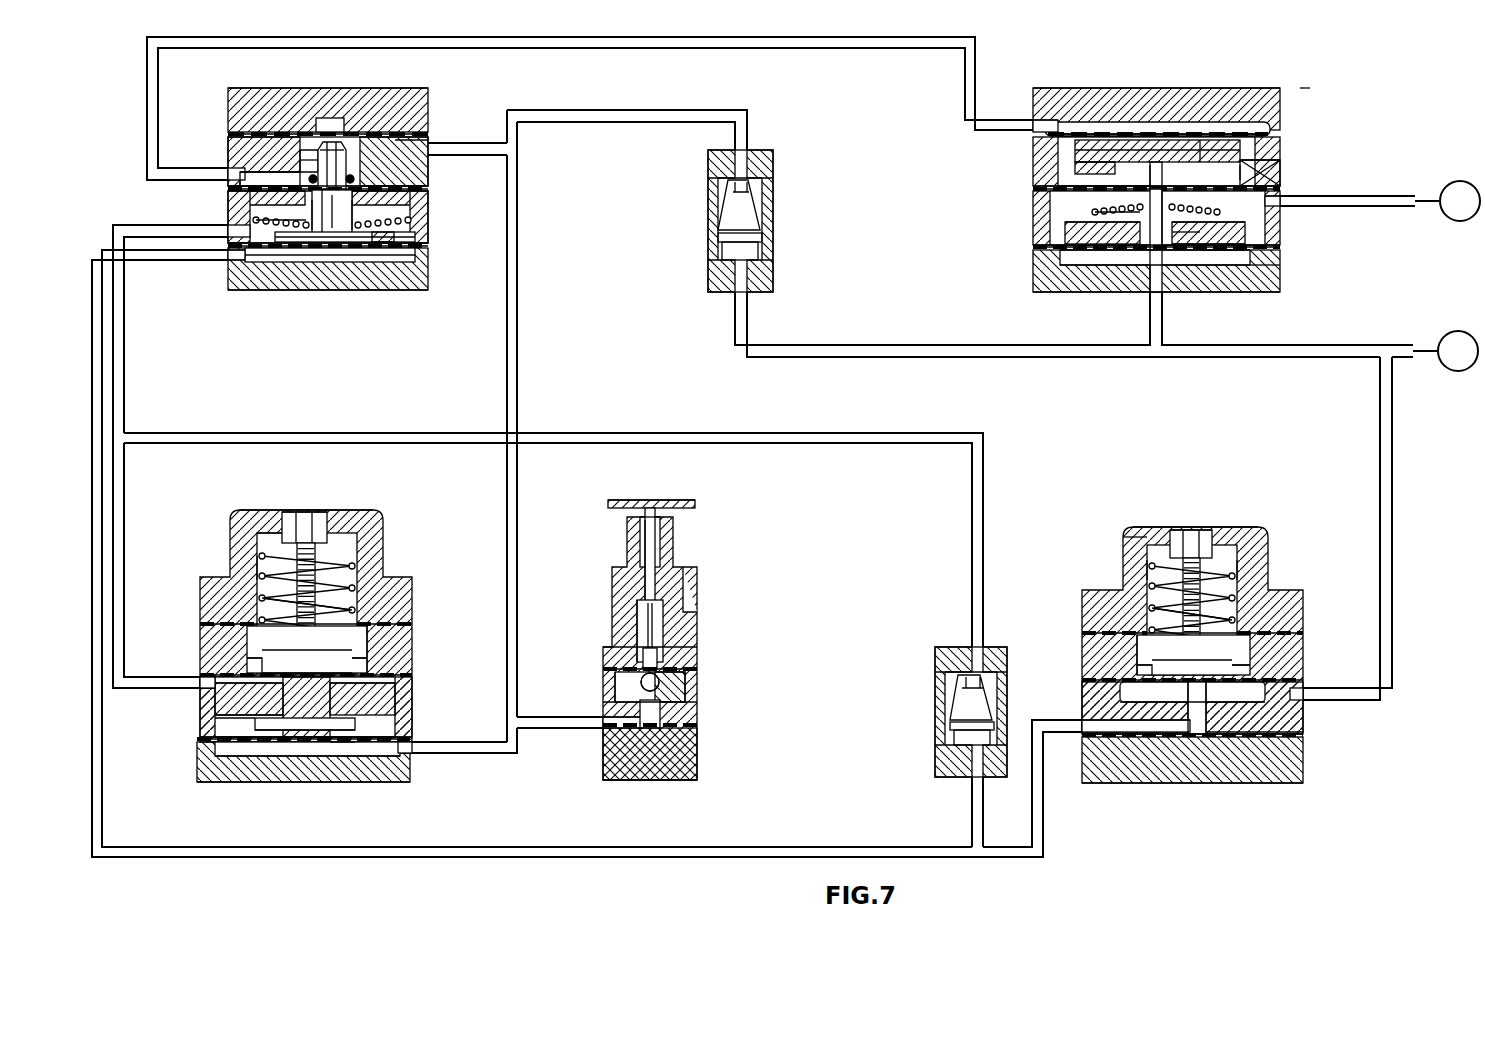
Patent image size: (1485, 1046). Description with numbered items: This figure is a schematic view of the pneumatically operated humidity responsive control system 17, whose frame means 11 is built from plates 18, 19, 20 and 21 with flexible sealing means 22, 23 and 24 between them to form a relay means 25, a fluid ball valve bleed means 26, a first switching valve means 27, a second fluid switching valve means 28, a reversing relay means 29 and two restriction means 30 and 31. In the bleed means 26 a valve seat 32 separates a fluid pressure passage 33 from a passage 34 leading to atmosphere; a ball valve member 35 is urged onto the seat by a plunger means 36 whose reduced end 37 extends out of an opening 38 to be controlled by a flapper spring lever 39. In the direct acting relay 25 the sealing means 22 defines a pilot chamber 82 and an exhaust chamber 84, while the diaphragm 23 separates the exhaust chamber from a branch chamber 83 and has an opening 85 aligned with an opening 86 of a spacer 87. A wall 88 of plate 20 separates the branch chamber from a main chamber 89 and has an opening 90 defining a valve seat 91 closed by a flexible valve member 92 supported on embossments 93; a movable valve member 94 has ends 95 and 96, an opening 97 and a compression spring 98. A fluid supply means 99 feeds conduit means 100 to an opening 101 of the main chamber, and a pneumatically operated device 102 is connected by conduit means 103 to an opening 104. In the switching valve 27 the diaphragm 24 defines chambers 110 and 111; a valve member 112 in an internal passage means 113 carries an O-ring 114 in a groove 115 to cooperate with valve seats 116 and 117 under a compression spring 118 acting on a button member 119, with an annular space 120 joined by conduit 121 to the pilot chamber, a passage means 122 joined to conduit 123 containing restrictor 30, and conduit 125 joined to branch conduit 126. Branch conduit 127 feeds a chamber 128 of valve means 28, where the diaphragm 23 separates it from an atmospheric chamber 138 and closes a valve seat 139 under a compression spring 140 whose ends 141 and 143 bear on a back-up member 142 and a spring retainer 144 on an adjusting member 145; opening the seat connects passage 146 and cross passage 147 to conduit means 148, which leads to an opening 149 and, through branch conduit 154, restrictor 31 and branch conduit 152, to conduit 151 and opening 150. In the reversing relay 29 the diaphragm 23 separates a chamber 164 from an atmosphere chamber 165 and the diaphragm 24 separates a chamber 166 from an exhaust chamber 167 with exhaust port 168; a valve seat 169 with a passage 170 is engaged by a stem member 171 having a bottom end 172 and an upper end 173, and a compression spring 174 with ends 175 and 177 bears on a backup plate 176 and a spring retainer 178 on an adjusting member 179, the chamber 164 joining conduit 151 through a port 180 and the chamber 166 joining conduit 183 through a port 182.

The frame means 11 is at (1150, 530).
The control system 17 is at (1306, 44).
The housing plate 18 is at (412, 106).
The housing plate 19 is at (405, 165).
The housing plate 20 is at (410, 212).
The housing plate 21 is at (405, 278).
The flexible sealing means 22 is at (268, 133).
The flexible sealing means 23 is at (245, 190).
The flexible sealing means 24 is at (392, 247).
The relay construction means 25 is at (1290, 116).
The fluid ball valve bleed means 26 is at (722, 564).
The first switching valve means 27 is at (258, 297).
The second fluid switching valve means 28 is at (1274, 539).
The reversing relay means 29 is at (398, 513).
The restriction means 30 is at (775, 214).
The restriction means 31 is at (924, 670).
The valve seat 32 is at (625, 692).
The fluid pressure passage 33 is at (620, 725).
The passage 34 is at (628, 672).
The ball valve member 35 is at (660, 682).
The plunger means 36 is at (640, 620).
The reduced end 37 is at (635, 530).
The opening 38 is at (642, 545).
The flapper spring lever 39 is at (680, 502).
The pilot chamber 82 is at (1158, 130).
The branch chamber 83 is at (1082, 205).
The exhaust chamber 84 is at (1058, 140).
The opening 85 is at (1160, 165).
The opening 86 is at (1090, 165).
The spacer 87 is at (1105, 140).
The wall 88 is at (1205, 252).
The main chamber 89 is at (1070, 257).
The opening 90 is at (1100, 228).
The valve seat 91 is at (1175, 256).
The flexible valve member 92 is at (1278, 290).
The embossments 93 is at (1110, 262).
The movable valve member 94 is at (1265, 243).
The end 95 is at (1090, 186).
The end 96 is at (1162, 258).
The opening 97 is at (1262, 216).
The compression spring 98 is at (1265, 172).
The fluid supply means 99 is at (1456, 372).
The conduit means 100 is at (1298, 358).
The opening 101 is at (1142, 266).
The pneumatically operated device 102 is at (1470, 182).
The conduit means 103 is at (1408, 208).
The opening 104 is at (1262, 198).
The chamber 110 is at (256, 220).
The chamber 111 is at (318, 256).
The valve member 112 is at (350, 215).
The internal passage means 113 is at (360, 200).
The O-ring 114 is at (270, 168).
The annular groove 115 is at (335, 142).
The upper valve seat 116 is at (305, 160).
The lower valve seat 117 is at (310, 184).
The compression spring 118 is at (385, 233).
The button member 119 is at (368, 248).
The annular space 120 is at (405, 145).
The conduit 121 is at (633, 37).
The passage means 122 is at (504, 138).
The conduit 123 is at (627, 108).
The conduit 125 is at (521, 380).
The branch conduit 126 is at (548, 728).
The branch conduit 127 is at (1393, 480).
The chamber 128 is at (1250, 698).
The atmospheric chamber 138 is at (1145, 645).
The valve seat 139 is at (1190, 722).
The compression spring 140 is at (1165, 600).
The end 141 is at (1148, 665).
The back-up member 142 is at (1250, 668).
The end 143 is at (1165, 572).
The spring retainer 144 is at (1232, 562).
The threaded adjusting member 145 is at (1212, 540).
The passage 146 is at (1205, 702).
The cross passage 147 is at (1125, 732).
The conduit means 148 is at (1042, 858).
The opening 149 is at (233, 270).
The opening 150 is at (228, 255).
The conduit 151 is at (118, 225).
The branch conduit 152 is at (330, 432).
The branch conduit 154 is at (971, 800).
The chamber 164 is at (235, 684).
The atmosphere chamber 165 is at (370, 660).
The chamber 166 is at (302, 757).
The exhaust chamber 167 is at (212, 745).
The exhaust port 168 is at (210, 725).
The valve seat 169 is at (390, 668).
The passage 170 is at (235, 718).
The stem member 171 is at (332, 728).
The bottom end 172 is at (337, 752).
The upper end 173 is at (316, 700).
The compression spring 174 is at (265, 585).
The end 175 is at (265, 655).
The backup plate 176 is at (395, 632).
The end 177 is at (272, 565).
The spring retainer 178 is at (265, 535).
The threaded adjusting member 179 is at (308, 520).
The port 180 is at (205, 682).
The port 182 is at (416, 757).
The conduit 183 is at (500, 745).